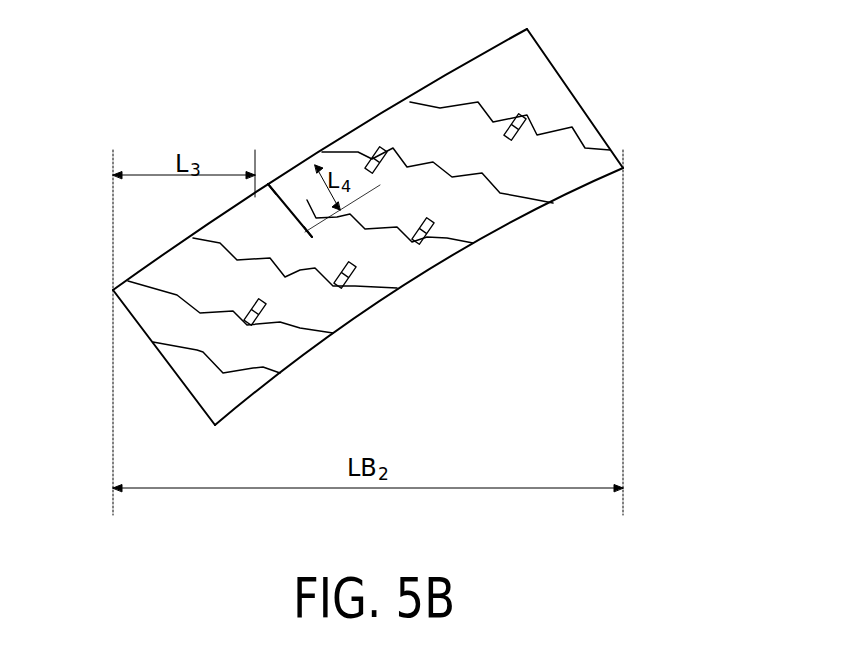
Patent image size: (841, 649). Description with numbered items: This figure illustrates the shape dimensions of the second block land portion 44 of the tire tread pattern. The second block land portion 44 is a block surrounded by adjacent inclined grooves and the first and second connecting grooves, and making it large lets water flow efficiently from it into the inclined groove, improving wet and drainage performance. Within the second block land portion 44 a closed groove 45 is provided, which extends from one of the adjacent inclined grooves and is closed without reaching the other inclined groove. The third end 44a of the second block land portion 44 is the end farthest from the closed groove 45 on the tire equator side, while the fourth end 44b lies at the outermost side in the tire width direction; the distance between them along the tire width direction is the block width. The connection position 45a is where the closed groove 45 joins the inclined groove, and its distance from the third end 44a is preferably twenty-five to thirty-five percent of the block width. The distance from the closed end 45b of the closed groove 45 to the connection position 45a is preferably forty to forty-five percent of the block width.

The second block land portion 44 is at (497, 247).
The third end of the second block land portion 44a is at (113, 290).
The fourth end of the second block land portion 44b is at (623, 168).
The closed groove 45 is at (272, 196).
The connection position 45a is at (255, 200).
The second end of cut line 45b is at (237, 212).